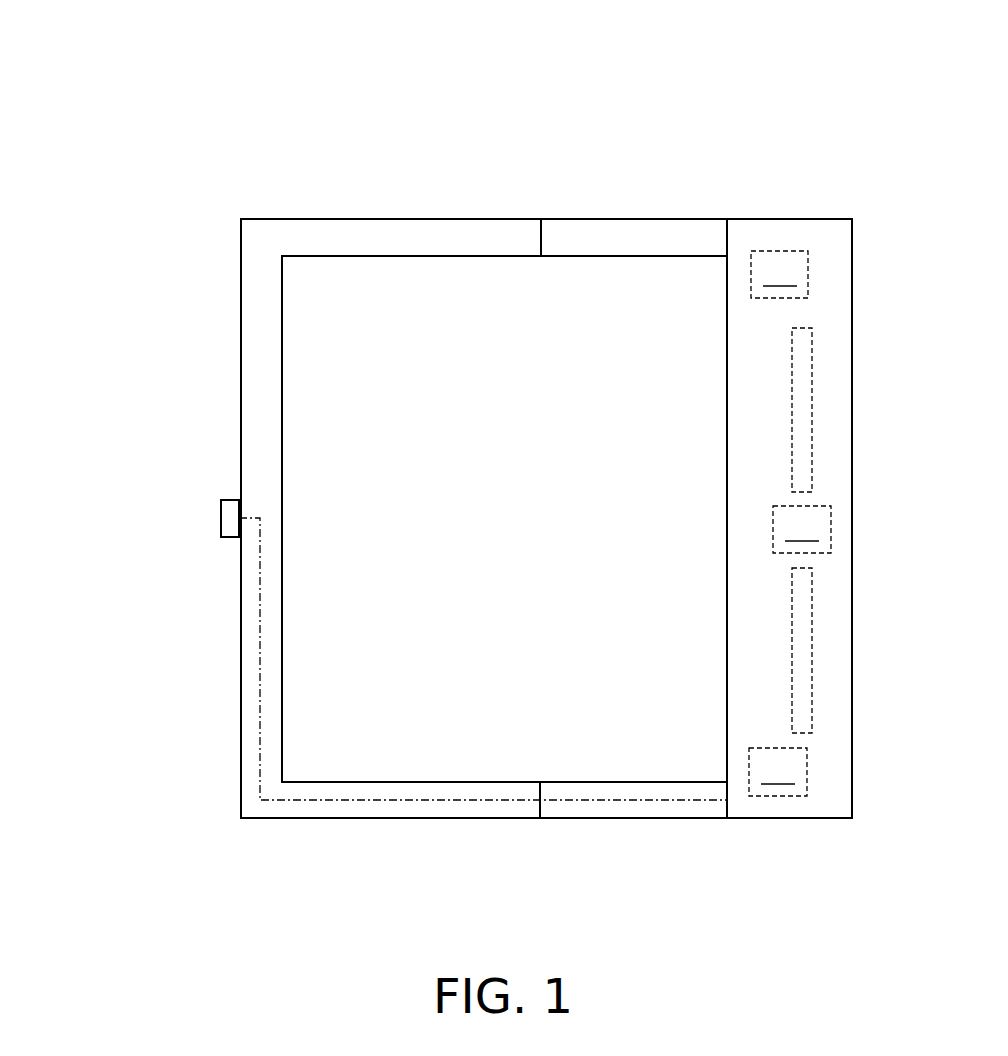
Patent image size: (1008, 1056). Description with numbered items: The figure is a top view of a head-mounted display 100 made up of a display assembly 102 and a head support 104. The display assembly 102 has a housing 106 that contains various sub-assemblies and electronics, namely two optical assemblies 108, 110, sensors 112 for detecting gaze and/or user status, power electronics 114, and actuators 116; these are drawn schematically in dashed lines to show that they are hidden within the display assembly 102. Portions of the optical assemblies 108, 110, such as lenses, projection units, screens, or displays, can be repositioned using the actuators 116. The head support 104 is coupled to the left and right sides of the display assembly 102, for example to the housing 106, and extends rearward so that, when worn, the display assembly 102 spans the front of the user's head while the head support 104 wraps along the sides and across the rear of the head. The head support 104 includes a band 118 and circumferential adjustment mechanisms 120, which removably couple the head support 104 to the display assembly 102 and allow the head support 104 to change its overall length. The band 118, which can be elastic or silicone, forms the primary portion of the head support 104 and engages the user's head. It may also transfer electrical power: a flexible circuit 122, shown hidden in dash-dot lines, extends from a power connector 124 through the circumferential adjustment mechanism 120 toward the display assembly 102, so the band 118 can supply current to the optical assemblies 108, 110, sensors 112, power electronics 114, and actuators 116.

The head-mounted display 100 is at (328, 153).
The display assembly 102 is at (780, 184).
The head support 104 is at (502, 192).
The housing 106 is at (727, 325).
The optical assembly 108 is at (792, 396).
The optical assembly 110 is at (792, 612).
The sensors 112 is at (779, 274).
The power electronics 114 is at (778, 772).
The actuators 116 is at (802, 529).
The band 118 is at (282, 414).
The circumferential adjustment mechanism 120 is at (655, 219).
The flexible circuit 122 is at (260, 580).
The power connector 124 is at (221, 515).